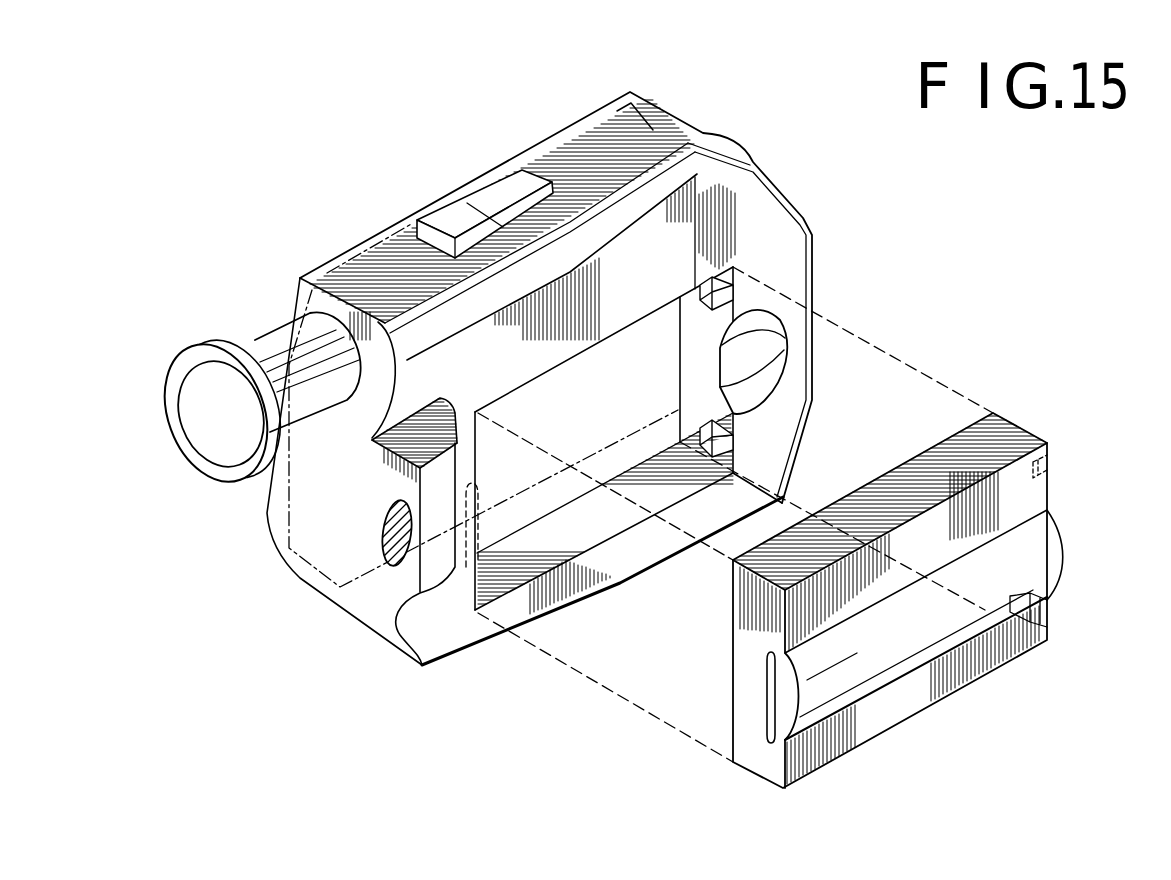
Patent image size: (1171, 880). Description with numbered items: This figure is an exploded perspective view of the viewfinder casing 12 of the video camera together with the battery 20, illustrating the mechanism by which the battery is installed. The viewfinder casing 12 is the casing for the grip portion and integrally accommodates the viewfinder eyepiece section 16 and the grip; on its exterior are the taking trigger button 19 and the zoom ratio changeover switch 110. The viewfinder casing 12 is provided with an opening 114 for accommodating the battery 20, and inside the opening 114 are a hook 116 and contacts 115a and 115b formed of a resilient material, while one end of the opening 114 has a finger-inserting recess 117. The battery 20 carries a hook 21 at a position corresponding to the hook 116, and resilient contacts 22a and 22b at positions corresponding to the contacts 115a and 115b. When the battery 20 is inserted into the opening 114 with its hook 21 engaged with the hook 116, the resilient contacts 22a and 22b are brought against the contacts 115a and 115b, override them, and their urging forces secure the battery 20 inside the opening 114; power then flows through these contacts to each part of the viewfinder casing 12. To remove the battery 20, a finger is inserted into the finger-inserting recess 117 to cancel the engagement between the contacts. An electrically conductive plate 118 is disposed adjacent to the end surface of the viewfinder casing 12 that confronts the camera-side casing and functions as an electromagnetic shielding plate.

The viewfinder casing 12 is at (725, 160).
The viewfinder eyepiece section 16 is at (219, 481).
The taking trigger button 19 is at (395, 567).
The battery 20 is at (903, 702).
The hook 21 is at (770, 740).
The resilient contact 22a is at (1033, 470).
The resilient contact 22b is at (1033, 620).
The zoom ratio changeover switch 110 is at (485, 197).
The opening 114 is at (507, 583).
The contact 115a is at (727, 302).
The contact 115b is at (727, 448).
The hook 116 is at (463, 568).
The finger-inserting recess 117 is at (757, 380).
The electrically conductive plate 118 is at (650, 125).